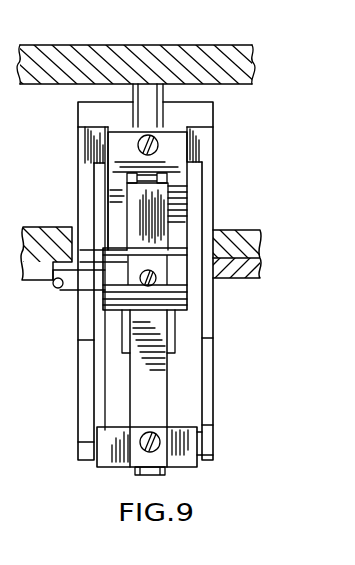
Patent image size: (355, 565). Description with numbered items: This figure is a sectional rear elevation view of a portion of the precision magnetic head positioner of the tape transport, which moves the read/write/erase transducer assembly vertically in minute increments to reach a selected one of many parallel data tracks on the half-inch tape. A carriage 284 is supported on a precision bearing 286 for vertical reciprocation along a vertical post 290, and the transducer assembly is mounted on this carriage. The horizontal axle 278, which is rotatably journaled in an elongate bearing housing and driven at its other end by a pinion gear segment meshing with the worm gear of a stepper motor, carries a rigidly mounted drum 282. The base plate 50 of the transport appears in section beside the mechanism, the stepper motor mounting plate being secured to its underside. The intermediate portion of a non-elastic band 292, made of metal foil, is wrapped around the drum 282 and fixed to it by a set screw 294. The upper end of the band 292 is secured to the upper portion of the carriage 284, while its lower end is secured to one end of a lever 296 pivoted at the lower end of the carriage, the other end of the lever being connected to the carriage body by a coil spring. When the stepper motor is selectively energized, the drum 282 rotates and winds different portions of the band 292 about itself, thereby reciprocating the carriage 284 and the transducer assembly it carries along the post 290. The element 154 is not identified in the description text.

The support plate 154 is at (209, 50).
The post 290 is at (150, 118).
The carriage 284 is at (88, 355).
The precision bearing 286 is at (130, 198).
The base plate 50 is at (52, 228).
The horizontal axle 278 is at (63, 284).
The drum 282 is at (177, 260).
The set screw 294 is at (156, 282).
The non-elastic band 292 is at (160, 380).
The lever 296 is at (108, 432).